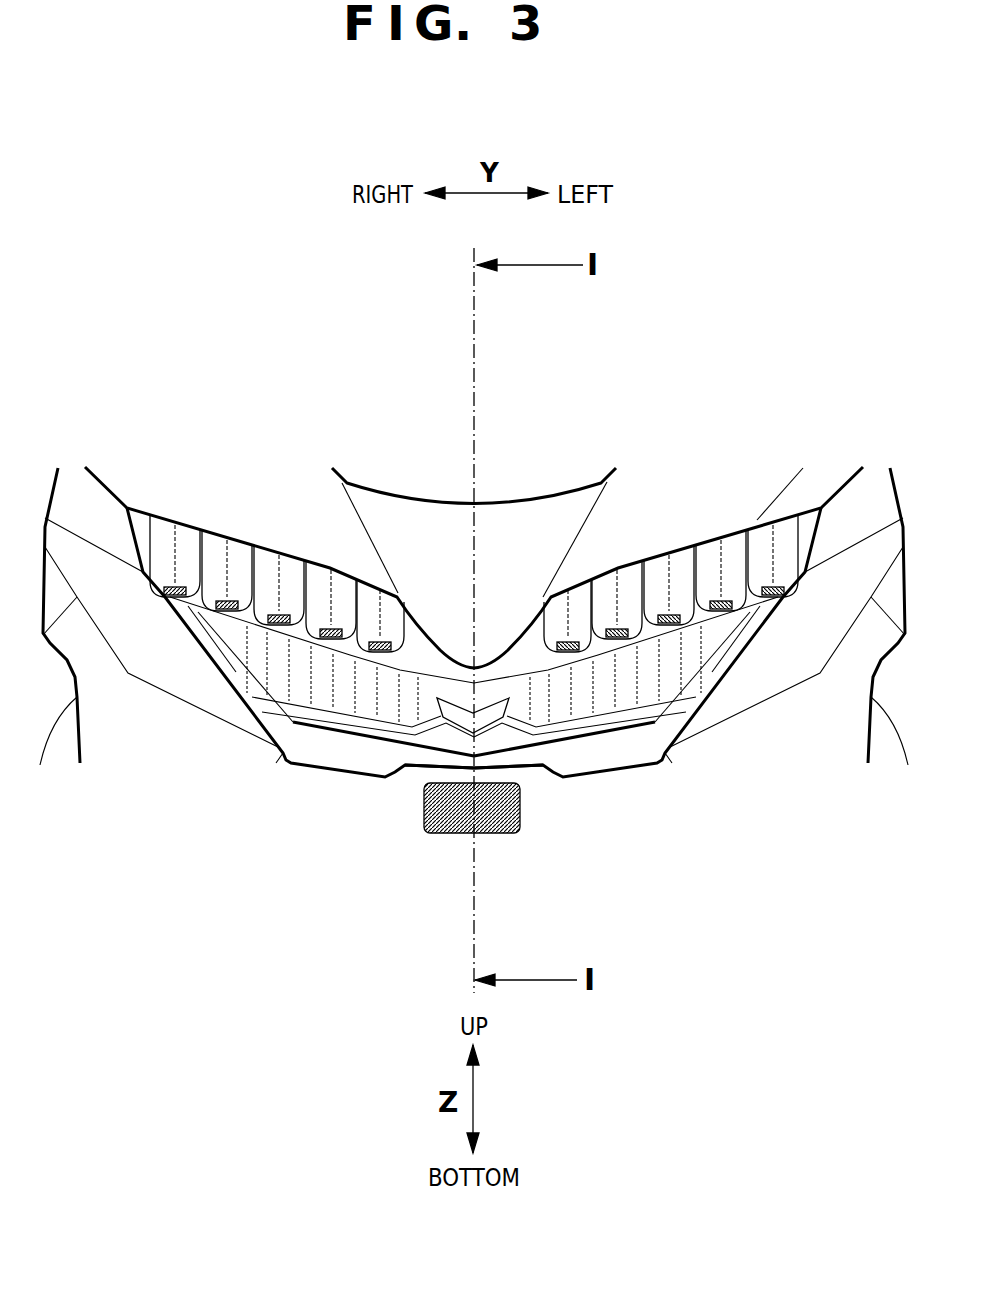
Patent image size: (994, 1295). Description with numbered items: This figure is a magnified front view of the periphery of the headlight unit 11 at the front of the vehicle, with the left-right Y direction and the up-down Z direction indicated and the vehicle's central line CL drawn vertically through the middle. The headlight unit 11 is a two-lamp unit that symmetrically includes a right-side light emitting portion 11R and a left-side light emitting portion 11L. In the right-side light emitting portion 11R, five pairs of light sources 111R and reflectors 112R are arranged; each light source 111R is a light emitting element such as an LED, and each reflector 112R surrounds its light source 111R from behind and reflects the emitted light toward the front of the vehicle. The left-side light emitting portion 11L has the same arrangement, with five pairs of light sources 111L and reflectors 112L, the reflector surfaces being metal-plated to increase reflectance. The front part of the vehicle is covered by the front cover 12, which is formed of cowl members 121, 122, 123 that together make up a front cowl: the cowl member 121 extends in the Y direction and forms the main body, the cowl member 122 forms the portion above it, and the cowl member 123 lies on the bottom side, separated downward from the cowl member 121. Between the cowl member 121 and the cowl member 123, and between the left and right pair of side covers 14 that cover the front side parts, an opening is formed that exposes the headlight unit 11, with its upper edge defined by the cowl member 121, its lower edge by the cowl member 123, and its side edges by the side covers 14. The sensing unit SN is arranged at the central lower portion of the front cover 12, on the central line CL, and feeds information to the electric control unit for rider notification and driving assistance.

The headlight unit 11 is at (532, 753).
The right-side light emitting portion 11R is at (273, 598).
The left-side light emitting portion 11L is at (668, 605).
The front cover 12 is at (588, 452).
The side cover 14 is at (173, 673).
The light source 111R is at (173, 620).
The light source 111L is at (621, 738).
The reflector 112R is at (148, 548).
The reflector 112L is at (637, 567).
The cowl member 121 is at (553, 537).
The cowl member 122 is at (535, 460).
The cowl member 123 is at (592, 758).
The sensing unit SN is at (465, 832).
The central line CL is at (475, 327).